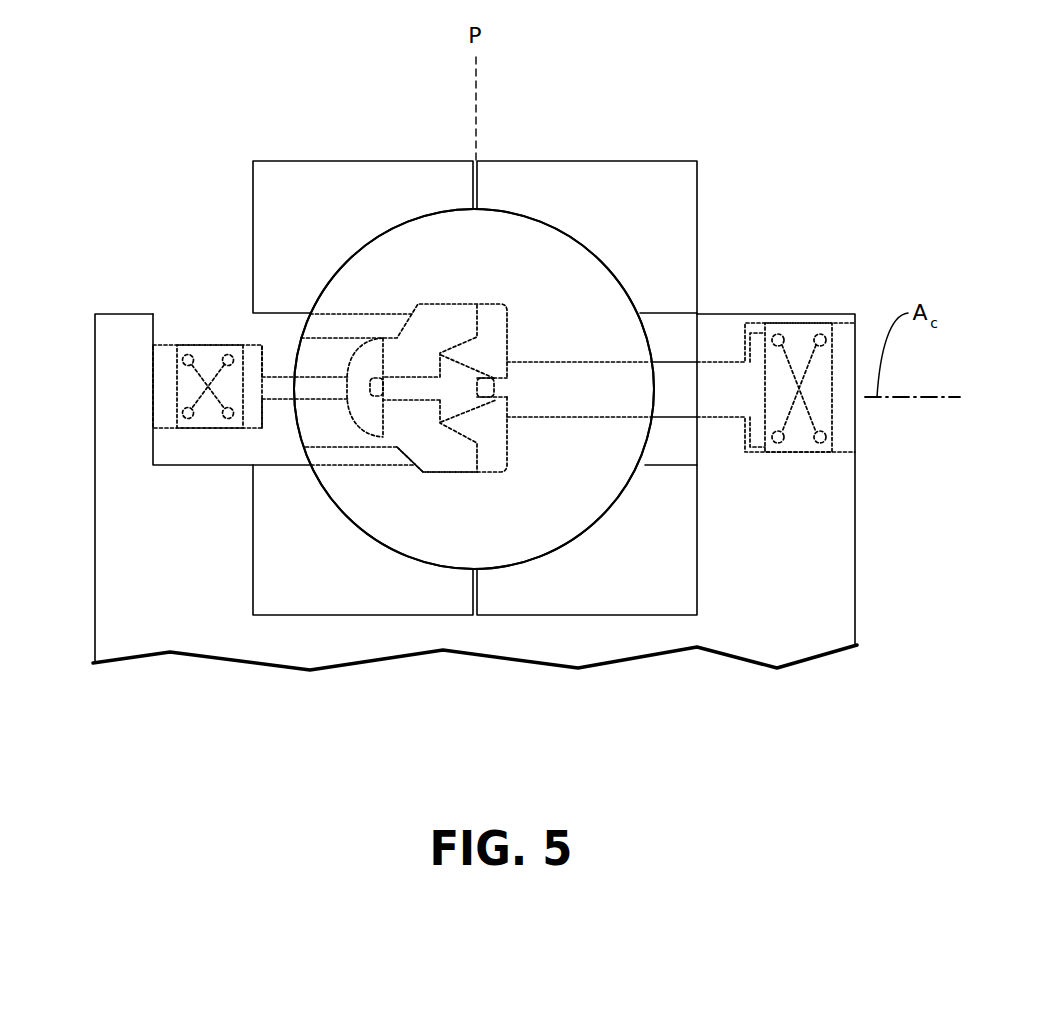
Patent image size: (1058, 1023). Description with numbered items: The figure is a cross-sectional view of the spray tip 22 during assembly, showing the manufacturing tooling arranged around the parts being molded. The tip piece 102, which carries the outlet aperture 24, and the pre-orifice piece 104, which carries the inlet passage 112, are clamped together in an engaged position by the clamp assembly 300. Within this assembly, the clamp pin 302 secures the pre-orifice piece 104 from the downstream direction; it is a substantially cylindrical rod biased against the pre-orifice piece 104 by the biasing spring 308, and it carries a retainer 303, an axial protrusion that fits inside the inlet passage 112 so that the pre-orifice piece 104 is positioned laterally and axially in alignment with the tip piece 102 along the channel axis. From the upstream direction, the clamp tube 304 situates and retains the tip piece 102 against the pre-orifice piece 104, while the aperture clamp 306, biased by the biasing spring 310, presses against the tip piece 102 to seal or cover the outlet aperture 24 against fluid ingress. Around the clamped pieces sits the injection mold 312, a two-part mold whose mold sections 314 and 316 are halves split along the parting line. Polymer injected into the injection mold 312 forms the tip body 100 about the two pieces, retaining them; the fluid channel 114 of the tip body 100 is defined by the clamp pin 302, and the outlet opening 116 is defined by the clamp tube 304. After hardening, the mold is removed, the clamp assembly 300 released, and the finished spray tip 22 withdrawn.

The spray tip 22 is at (414, 205).
The outlet aperture 24 is at (383, 385).
The tip body 100 is at (587, 302).
The tip piece 102 is at (448, 445).
The pre-orifice piece 104 is at (488, 452).
The inlet passage 112 is at (493, 410).
The fluid channel 114 is at (605, 367).
The outlet opening 116 is at (390, 470).
The clamp assembly 300 is at (128, 476).
The clamp pin 302 is at (670, 402).
The retainer 303 is at (490, 392).
The clamp tube 304 is at (347, 455).
The aperture clamp 306 is at (275, 392).
The biasing spring 308 is at (792, 410).
The biasing spring 310 is at (205, 393).
The injection mold 312 is at (485, 160).
The mold section 314 is at (327, 202).
The mold section 316 is at (533, 180).